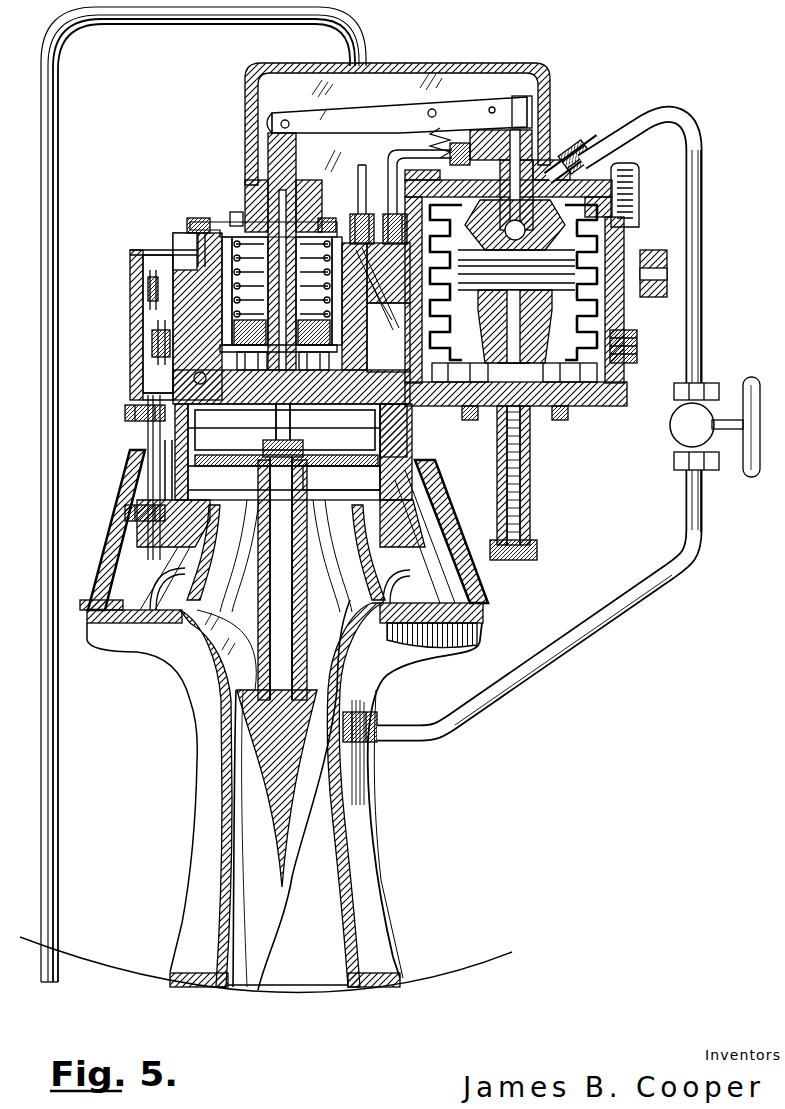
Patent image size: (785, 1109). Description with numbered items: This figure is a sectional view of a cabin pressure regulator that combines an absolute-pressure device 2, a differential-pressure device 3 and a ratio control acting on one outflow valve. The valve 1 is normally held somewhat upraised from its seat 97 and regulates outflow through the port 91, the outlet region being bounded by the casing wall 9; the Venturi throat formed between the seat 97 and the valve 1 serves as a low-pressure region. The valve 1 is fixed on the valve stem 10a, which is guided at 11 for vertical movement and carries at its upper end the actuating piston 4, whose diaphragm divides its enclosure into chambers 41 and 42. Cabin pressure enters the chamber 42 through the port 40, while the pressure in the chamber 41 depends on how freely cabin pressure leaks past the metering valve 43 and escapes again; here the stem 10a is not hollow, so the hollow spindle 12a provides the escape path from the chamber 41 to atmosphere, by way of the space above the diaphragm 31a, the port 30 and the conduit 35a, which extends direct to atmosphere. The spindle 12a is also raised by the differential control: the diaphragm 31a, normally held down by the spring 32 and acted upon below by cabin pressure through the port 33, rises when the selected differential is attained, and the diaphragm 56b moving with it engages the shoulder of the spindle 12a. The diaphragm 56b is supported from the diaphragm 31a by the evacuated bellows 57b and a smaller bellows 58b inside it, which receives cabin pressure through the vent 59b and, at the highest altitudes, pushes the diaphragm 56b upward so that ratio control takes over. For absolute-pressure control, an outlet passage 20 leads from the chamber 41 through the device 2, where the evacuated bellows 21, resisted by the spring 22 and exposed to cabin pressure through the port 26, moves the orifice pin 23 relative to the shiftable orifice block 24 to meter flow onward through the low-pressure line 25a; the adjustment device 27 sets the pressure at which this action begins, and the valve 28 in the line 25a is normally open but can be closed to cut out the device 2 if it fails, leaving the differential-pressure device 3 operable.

The valve 1 is at (393, 633).
The absolute-pressure device 2 is at (638, 182).
The differential-pressure device 3 is at (236, 213).
The actuating piston 4 is at (150, 497).
The casing arc 9 is at (460, 965).
The valve stem 10a is at (290, 522).
The guide 11 is at (372, 575).
The spindle 12a is at (272, 418).
The outlet passage 20 is at (368, 348).
The evacuated bellows 21 is at (637, 222).
The spring 22 is at (612, 313).
The orifice pin 23 is at (540, 190).
The orifice block 24 is at (522, 182).
The low-pressure line 25a is at (660, 575).
The port 26 is at (668, 278).
The adjustment device 27 is at (537, 473).
The valve 28 is at (716, 450).
The port 30 is at (378, 308).
The diaphragm 31a is at (190, 380).
The spring 32 is at (240, 266).
The port 33 is at (175, 340).
The conduit 35a is at (57, 780).
The port 40 is at (205, 492).
The chamber 41 is at (345, 418).
The chamber 42 is at (340, 483).
The metering valve 43 is at (166, 445).
The diaphragm 56b is at (196, 266).
The evacuated bellows 57b is at (225, 305).
The bellows 58b is at (275, 335).
The vent 59b is at (195, 413).
The port 91 is at (295, 986).
The seat 97 is at (216, 689).